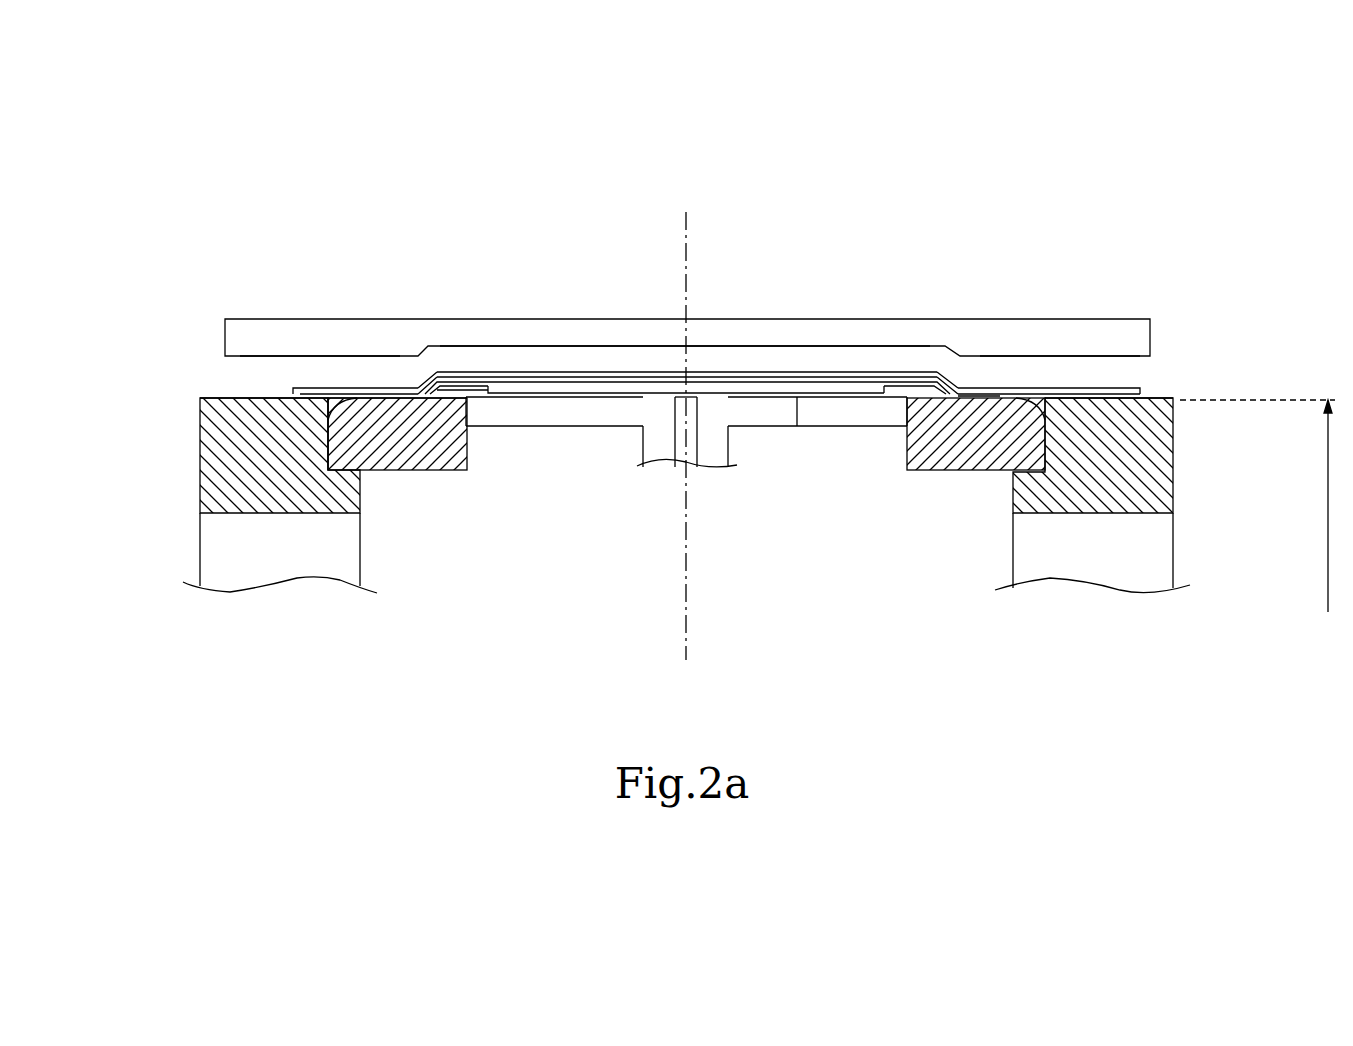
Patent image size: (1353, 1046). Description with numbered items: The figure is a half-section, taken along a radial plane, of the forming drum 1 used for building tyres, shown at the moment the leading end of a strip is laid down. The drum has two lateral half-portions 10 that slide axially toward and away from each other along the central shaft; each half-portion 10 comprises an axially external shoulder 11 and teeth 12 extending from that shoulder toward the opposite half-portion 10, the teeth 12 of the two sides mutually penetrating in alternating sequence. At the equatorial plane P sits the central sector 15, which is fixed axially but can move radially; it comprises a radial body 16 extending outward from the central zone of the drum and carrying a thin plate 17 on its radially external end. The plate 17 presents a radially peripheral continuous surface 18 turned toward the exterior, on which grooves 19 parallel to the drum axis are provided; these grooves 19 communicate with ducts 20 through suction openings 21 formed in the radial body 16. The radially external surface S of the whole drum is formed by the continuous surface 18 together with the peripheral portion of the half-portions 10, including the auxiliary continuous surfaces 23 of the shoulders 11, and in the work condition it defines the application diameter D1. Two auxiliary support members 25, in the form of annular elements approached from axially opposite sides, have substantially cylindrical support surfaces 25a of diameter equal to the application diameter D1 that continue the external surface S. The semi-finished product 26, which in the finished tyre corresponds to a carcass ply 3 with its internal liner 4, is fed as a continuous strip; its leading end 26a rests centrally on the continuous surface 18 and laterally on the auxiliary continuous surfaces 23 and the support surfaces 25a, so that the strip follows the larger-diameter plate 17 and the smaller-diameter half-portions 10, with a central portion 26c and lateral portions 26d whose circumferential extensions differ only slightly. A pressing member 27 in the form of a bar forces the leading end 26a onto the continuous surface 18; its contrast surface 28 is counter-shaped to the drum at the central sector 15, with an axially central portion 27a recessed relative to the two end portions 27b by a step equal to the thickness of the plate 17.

The forming drum 1 is at (840, 143).
The carcass ply 3 is at (577, 380).
The liner 4 is at (350, 447).
The lateral half-portion 10 is at (686, 475).
The axially external shoulder 11 is at (621, 464).
The teeth 12 is at (777, 413).
The central sector 15 is at (627, 453).
The radial body 16 is at (715, 447).
The plate 17 is at (557, 413).
The radially peripheral continuous surface 18 is at (686, 310).
The grooves 19 is at (823, 389).
The ducts 20 is at (678, 447).
The suction openings 21 is at (680, 408).
The auxiliary continuous surfaces 23 is at (395, 400).
The auxiliary support members 25 is at (696, 374).
The support surfaces 25a is at (215, 396).
The semi-finished product 26 is at (775, 259).
The leading end 26a is at (707, 352).
The central portion 26c is at (478, 372).
The lateral portions 26d is at (343, 396).
The pressing member 27 is at (719, 250).
The axially central portion 27a is at (760, 336).
The end portions 27b is at (295, 336).
The contrast surface 28 is at (398, 410).
The equatorial plane P is at (686, 222).
The radially external surface S is at (978, 393).
The application diameter D1 is at (1328, 512).